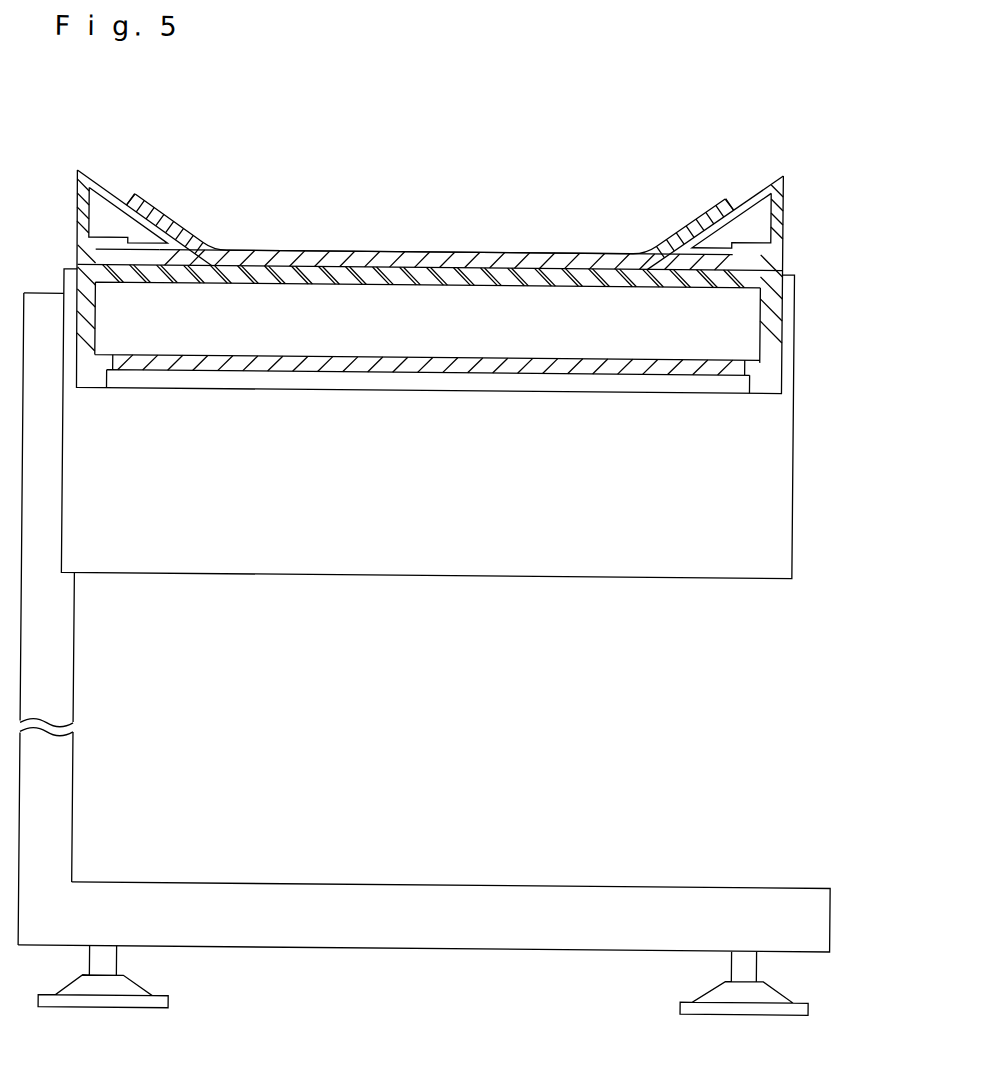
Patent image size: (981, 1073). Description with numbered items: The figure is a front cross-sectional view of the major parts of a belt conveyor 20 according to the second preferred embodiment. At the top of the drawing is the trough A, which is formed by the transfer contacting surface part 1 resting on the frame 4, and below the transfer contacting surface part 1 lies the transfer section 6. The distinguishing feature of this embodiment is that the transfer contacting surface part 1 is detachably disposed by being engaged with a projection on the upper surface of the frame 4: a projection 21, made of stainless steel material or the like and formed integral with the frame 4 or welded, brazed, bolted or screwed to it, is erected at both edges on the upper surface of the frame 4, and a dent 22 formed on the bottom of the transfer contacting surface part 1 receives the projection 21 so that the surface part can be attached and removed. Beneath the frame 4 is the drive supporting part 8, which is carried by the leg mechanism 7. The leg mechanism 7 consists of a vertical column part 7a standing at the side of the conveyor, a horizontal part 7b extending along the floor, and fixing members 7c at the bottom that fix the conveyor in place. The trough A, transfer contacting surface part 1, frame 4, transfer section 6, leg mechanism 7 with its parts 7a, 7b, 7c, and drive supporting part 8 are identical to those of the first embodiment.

The belt conveyor 20 is at (549, 177).
The transfer contacting surface part 1 is at (770, 200).
The dent 22 is at (764, 254).
The projection 21 is at (750, 264).
The frame 4 is at (771, 335).
The transfer section 6 is at (320, 263).
The drive supporting part 8 is at (757, 480).
The leg mechanism 7 is at (534, 758).
The vertical column part 7a is at (61, 683).
The horizontal part 7b is at (391, 900).
The fixing member 7c is at (691, 1003).
The trough A is at (844, 150).